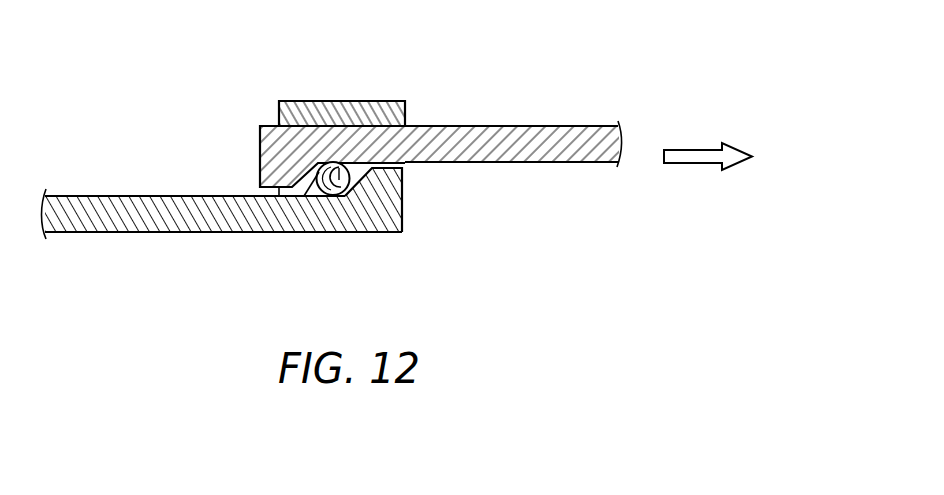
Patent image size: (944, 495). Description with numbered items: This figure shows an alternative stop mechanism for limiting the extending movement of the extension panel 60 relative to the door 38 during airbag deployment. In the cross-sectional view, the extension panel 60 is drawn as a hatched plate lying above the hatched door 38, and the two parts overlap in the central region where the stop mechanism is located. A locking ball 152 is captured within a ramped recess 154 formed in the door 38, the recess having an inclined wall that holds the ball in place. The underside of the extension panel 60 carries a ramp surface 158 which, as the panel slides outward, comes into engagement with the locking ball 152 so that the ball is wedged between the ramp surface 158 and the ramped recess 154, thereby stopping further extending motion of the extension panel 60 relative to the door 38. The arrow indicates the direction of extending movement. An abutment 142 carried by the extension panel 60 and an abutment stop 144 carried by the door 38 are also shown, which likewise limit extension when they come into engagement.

The door 38 is at (173, 213).
The extension panel 60 is at (483, 152).
The abutment 142 is at (278, 153).
The abutment stop 144 is at (390, 200).
The locking ball 152 is at (340, 163).
The ramped recess 154 is at (332, 196).
The ramp surface 158 is at (313, 192).